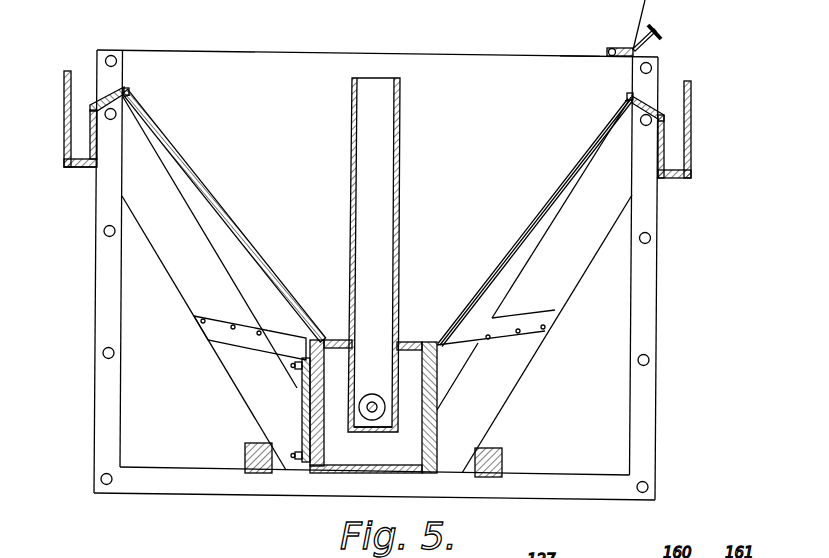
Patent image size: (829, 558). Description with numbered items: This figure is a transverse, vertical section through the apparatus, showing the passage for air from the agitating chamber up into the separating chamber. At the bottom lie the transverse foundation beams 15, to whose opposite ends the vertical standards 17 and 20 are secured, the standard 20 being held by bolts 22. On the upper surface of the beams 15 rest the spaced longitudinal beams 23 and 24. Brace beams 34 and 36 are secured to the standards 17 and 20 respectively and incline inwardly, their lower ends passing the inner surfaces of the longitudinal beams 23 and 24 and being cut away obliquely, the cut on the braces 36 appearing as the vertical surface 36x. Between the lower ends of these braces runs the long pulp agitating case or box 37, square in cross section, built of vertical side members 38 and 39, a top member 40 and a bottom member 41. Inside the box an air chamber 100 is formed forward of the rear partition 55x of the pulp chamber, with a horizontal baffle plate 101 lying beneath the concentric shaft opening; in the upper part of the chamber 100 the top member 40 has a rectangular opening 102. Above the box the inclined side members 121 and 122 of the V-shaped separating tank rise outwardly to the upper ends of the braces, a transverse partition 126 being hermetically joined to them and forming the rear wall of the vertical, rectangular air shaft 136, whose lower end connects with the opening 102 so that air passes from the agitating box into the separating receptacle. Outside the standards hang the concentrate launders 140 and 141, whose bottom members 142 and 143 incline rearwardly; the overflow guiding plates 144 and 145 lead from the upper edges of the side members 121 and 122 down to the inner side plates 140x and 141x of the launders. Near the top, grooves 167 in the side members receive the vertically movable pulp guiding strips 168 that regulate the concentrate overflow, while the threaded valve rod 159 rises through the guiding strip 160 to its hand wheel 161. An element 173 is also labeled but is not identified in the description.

The beams 15 is at (562, 488).
The vertical standard 17 is at (102, 303).
The vertical standard 20 is at (649, 298).
The bolts 22 is at (101, 481).
The longitudinal beam 23 is at (245, 451).
The longitudinal beam 24 is at (499, 448).
The brace beam 34 is at (183, 287).
The brace beam 36 is at (552, 308).
The cut-away surface 36x is at (437, 437).
The pulp agitating case or box 37 is at (340, 406).
The vertical side member 38 is at (306, 361).
The vertical side member 39 is at (438, 372).
The top member 40 is at (325, 340).
The bottom member 41 is at (345, 474).
The rear partition 55x is at (270, 395).
The air chamber 100 is at (477, 390).
The horizontal baffle plate 101 is at (373, 445).
The opening 102 is at (371, 388).
The side member 121 is at (232, 231).
The side member 122 is at (553, 188).
The transverse partition 126 is at (283, 58).
The air shaft 136 is at (399, 153).
The launder 140 is at (64, 157).
The inner side member 140x is at (90, 124).
The launder 141 is at (692, 165).
The inner side member 141x is at (666, 137).
The bottom member 142 is at (82, 165).
The bottom member 143 is at (674, 178).
The overflow guiding plate 144 is at (100, 101).
The overflow guiding plate 145 is at (651, 107).
The rod 159 is at (656, 25).
The guiding strip 160 is at (618, 47).
The hand wheel 161 is at (662, 34).
The longitudinal groove 167 is at (132, 94).
The pulp guiding strip 168 is at (129, 90).
The top rail portion 173 is at (579, 44).